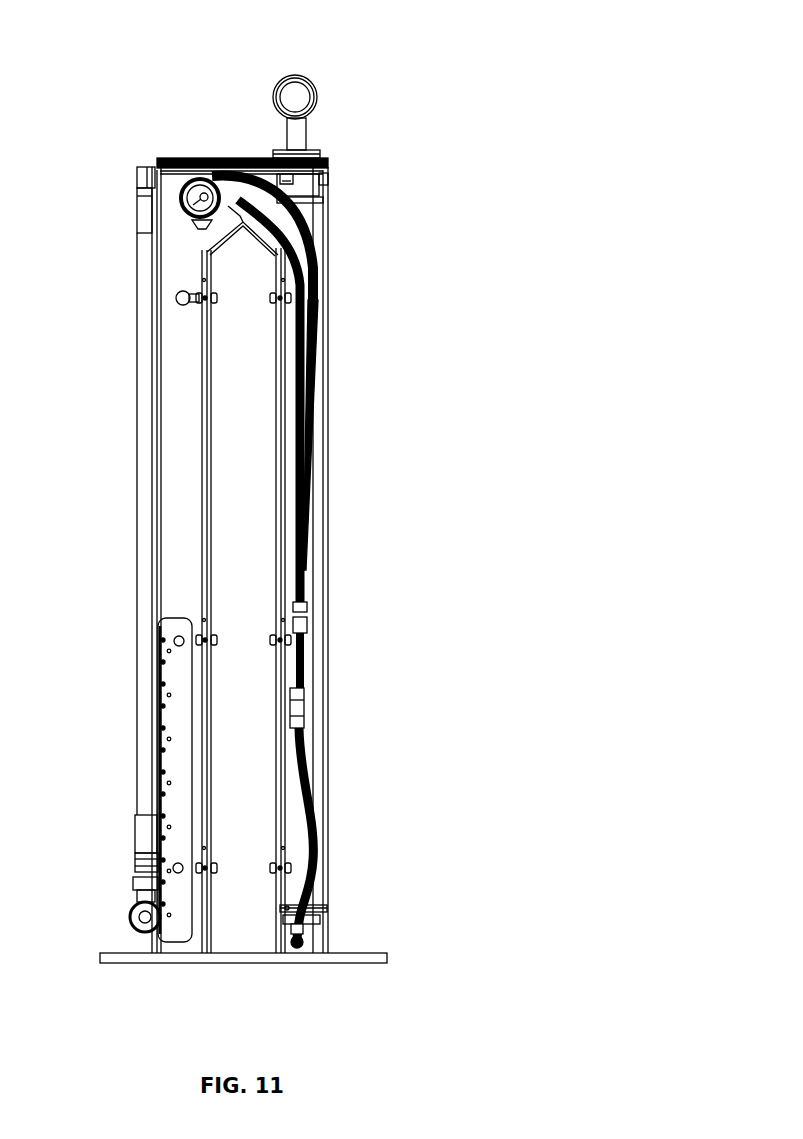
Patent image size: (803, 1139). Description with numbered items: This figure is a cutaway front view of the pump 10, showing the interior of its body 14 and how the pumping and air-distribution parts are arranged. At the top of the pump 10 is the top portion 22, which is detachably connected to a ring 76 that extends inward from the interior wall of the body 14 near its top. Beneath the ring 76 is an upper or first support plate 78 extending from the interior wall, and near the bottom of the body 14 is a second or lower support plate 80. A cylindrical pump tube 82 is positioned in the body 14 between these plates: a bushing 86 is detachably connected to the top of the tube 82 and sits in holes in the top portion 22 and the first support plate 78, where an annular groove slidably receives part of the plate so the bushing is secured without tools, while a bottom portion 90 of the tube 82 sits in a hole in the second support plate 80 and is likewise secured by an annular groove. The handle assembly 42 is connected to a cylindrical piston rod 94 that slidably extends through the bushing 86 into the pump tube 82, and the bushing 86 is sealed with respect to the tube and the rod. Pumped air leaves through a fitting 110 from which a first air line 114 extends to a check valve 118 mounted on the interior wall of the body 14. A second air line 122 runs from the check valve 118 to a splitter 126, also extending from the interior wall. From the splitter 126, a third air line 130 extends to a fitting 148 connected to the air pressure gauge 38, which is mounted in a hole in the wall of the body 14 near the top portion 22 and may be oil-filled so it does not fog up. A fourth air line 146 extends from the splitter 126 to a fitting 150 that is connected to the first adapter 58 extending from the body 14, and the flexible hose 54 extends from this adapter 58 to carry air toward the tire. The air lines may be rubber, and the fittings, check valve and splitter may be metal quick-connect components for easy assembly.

The pump 10 is at (344, 519).
The body 14 is at (332, 688).
The top portion 22 is at (181, 158).
The air pressure gauge 38 is at (195, 200).
The handle assembly 42 is at (322, 82).
The flexible hose 54 is at (137, 431).
The first adapter 58 is at (140, 184).
The ring 76 is at (328, 177).
The first support plate 78 is at (328, 203).
The second support plate 80 is at (318, 906).
The pump tube 82 is at (310, 753).
The bushing 86 is at (298, 177).
The bottom portion 90 is at (320, 918).
The piston rod 94 is at (287, 141).
The fitting 110 is at (291, 937).
The first air line 114 is at (317, 852).
The check valve 118 is at (303, 713).
The second air line 122 is at (305, 652).
The splitter 126 is at (307, 612).
The third air line 130 is at (319, 292).
The fourth air line 146 is at (318, 258).
The fitting 148 is at (240, 207).
The fitting 150 is at (137, 168).